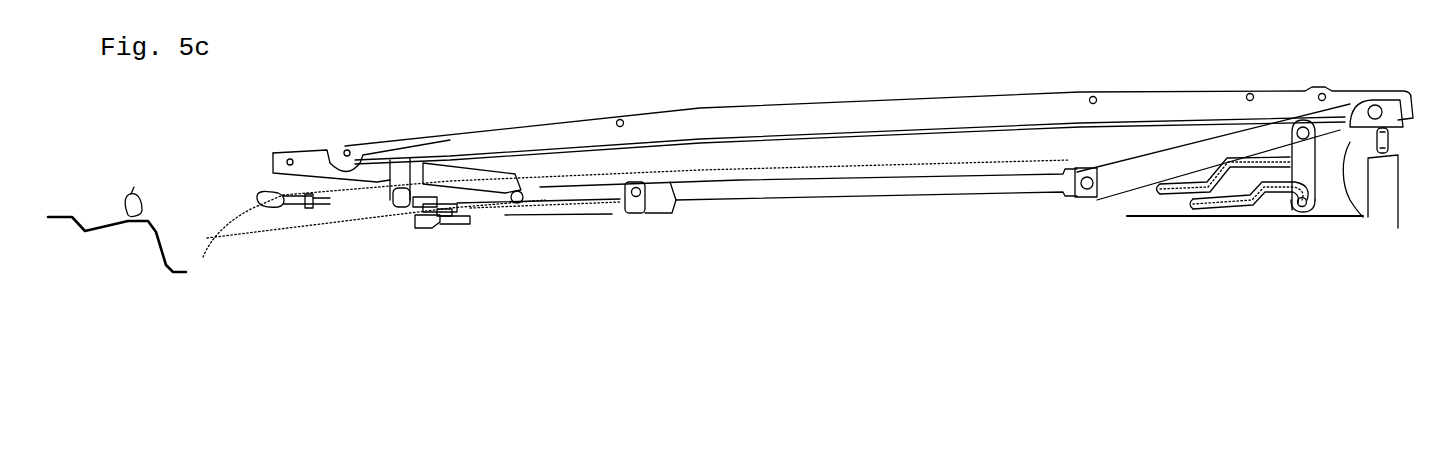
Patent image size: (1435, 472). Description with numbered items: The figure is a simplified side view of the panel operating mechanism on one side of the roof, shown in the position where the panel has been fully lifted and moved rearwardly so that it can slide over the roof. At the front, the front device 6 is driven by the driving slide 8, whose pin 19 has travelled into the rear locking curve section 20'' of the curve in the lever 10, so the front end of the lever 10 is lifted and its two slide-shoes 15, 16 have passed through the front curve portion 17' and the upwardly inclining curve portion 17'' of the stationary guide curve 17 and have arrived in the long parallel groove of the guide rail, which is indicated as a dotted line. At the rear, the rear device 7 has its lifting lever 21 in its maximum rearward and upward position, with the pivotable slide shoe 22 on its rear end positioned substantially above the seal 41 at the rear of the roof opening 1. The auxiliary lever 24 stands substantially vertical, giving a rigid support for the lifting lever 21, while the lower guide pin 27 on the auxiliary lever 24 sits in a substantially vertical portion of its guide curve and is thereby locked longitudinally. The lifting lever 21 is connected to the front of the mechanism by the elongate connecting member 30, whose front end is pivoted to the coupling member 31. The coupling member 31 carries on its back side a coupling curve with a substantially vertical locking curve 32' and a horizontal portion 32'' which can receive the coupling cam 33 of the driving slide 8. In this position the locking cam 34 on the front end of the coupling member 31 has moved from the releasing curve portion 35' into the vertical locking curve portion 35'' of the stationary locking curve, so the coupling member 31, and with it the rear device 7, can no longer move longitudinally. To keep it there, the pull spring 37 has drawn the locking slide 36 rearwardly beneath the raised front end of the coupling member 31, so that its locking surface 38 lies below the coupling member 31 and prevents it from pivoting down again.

The roof opening 1 is at (1340, 141).
The front device 6 is at (485, 298).
The rear device 7 is at (1176, 248).
The driving slide 8 is at (397, 205).
The lever 10 is at (515, 178).
The slide-shoe 15 is at (270, 193).
The slide-shoe 16 is at (307, 208).
The stationary guide curve 17 is at (676, 227).
The front curve portion 17' is at (296, 249).
The rearwardly connecting and upwardly inclining curve portion 17'' is at (268, 255).
The pin 19 is at (407, 183).
The rear locking curve section 20'' is at (379, 127).
The lifting lever 21 is at (1160, 150).
The pivotable slide shoe 22 is at (1397, 113).
The auxiliary lever 24 is at (1305, 178).
The guide pin 27 is at (1295, 203).
The elongate connecting member 30 is at (762, 187).
The coupling member 31 is at (577, 190).
The locking curve 32' is at (443, 121).
The horizontal portion 32'' is at (538, 246).
The coupling cam 33 is at (455, 212).
The locking cam 34 is at (447, 208).
The releasing curve portion 35' is at (368, 256).
The locking curve portion 35'' is at (443, 121).
The locking slide 36 is at (432, 222).
The pull spring 37 is at (607, 213).
The locking surface 38 is at (410, 212).
The seal 41 is at (1390, 141).